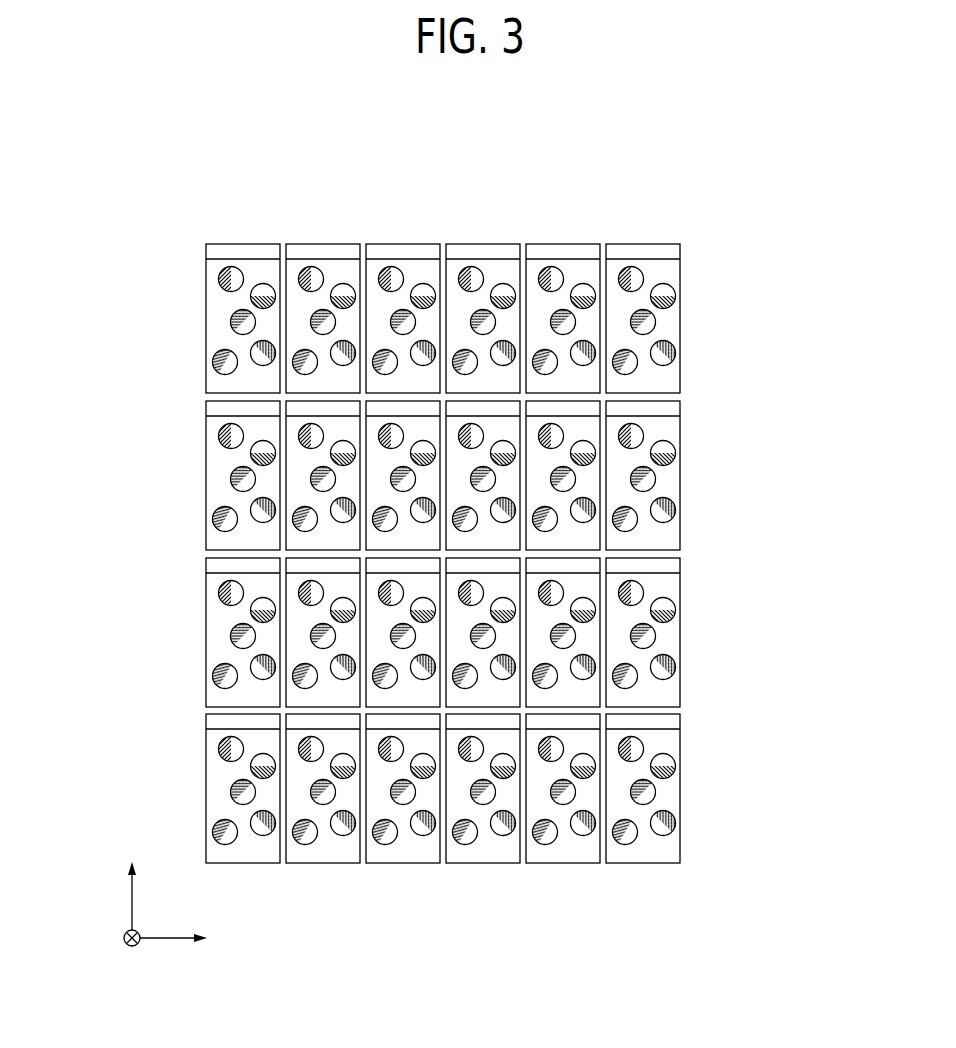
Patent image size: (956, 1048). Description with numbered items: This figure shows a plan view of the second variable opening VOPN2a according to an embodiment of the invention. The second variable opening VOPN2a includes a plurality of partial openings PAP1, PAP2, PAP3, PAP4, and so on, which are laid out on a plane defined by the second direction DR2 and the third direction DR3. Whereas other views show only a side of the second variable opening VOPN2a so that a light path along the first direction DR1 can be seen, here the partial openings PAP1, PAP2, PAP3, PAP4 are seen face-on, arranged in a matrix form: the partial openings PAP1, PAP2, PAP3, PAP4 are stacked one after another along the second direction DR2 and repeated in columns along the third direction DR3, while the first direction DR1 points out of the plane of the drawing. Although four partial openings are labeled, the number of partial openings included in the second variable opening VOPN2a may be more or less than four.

The second variable opening VOPN2a is at (723, 146).
The first partial opening PAP1 is at (465, 248).
The second partial opening PAP2 is at (485, 402).
The third partial opening PAP3 is at (485, 700).
The fourth partial opening PAP4 is at (470, 858).
The first direction DR1 is at (131, 956).
The second direction DR2 is at (132, 882).
The third direction DR3 is at (195, 939).